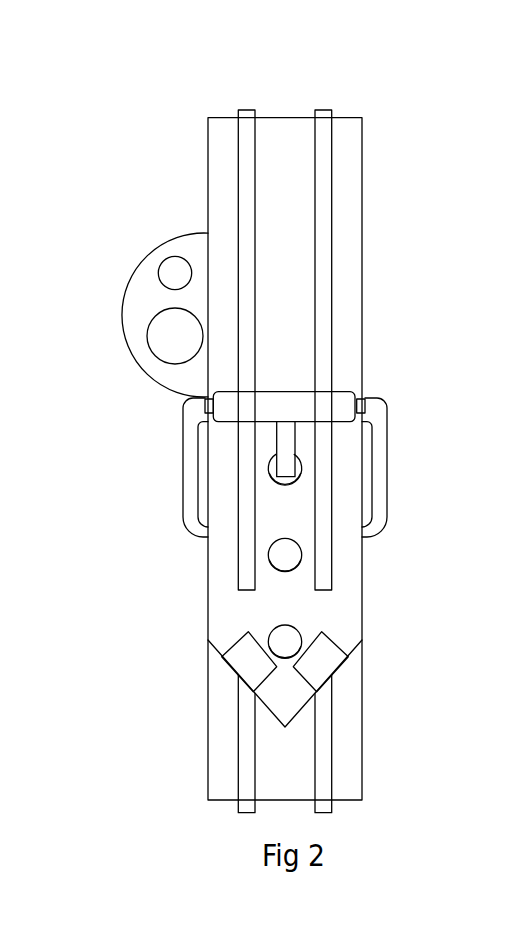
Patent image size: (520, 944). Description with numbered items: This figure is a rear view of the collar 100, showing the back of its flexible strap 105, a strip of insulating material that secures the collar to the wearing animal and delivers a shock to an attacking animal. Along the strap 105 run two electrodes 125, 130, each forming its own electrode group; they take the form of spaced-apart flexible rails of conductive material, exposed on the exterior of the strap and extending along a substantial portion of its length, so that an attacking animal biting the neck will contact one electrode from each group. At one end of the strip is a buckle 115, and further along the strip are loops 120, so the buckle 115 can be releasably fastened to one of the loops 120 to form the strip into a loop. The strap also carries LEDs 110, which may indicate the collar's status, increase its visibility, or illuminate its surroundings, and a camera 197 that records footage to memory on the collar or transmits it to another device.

The collar 100 is at (262, 423).
The flexible strap 105 is at (295, 238).
The LEDs 110 is at (178, 272).
The buckle 115 is at (373, 412).
The loops 120 is at (283, 638).
The electrode 125 is at (322, 158).
The electrode 130 is at (245, 163).
The camera 197 is at (168, 333).